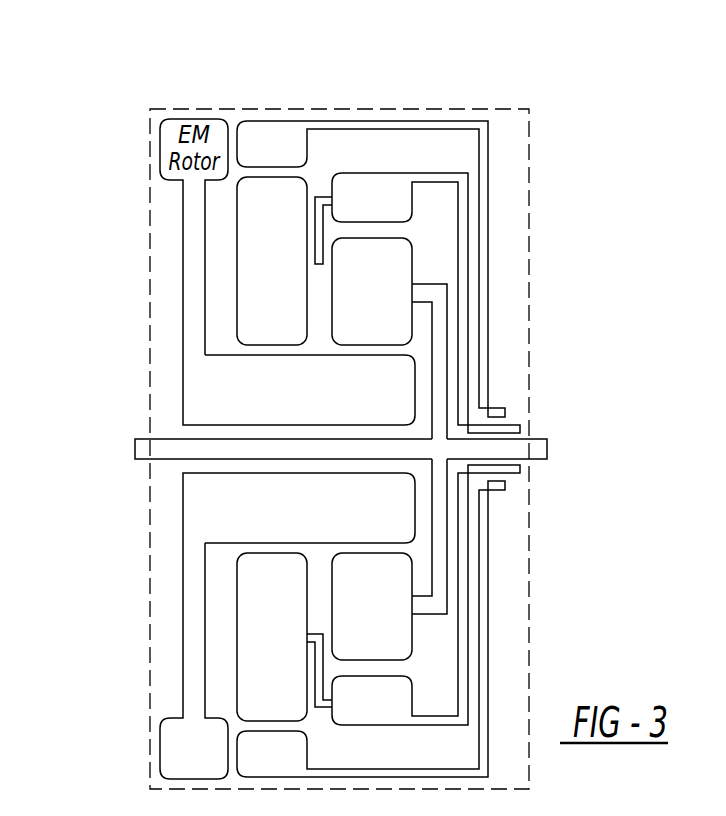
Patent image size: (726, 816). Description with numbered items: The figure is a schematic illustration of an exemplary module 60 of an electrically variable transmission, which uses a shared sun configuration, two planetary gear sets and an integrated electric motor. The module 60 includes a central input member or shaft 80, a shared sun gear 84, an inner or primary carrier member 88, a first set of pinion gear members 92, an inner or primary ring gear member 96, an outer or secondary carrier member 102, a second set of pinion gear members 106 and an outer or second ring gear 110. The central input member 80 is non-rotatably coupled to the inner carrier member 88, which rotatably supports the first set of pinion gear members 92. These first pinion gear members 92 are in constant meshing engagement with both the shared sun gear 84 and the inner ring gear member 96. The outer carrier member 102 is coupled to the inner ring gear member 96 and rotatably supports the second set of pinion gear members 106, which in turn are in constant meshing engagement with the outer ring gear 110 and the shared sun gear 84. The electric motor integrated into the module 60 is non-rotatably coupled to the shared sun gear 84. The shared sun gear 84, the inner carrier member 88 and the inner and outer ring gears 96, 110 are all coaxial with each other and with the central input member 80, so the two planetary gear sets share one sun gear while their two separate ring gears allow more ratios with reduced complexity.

The module 60 is at (556, 97).
The central input member 80 is at (168, 450).
The shared sun gear 84 is at (210, 402).
The inner carrier member 88 is at (438, 357).
The first set of pinion gear members 92 is at (400, 268).
The inner ring gear member 96 is at (387, 197).
The outer carrier member 102 is at (315, 197).
The second set of pinion gear members 106 is at (268, 238).
The outer ring gear 110 is at (262, 145).